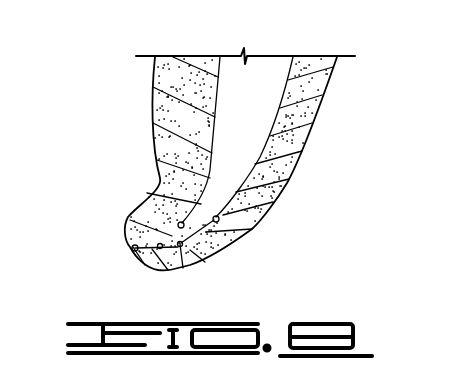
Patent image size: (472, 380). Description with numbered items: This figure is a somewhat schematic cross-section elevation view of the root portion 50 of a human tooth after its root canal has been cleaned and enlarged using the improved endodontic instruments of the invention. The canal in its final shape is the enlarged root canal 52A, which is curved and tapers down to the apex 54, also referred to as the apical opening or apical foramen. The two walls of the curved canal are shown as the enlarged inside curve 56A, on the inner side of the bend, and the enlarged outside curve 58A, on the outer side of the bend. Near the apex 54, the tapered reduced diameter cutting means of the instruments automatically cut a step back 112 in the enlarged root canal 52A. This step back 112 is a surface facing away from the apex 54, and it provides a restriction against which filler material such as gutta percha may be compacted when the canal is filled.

The root portion 50 is at (173, 115).
The enlarged root canal 52A is at (246, 237).
The enlarged inside curve of the root canal 56A is at (163, 208).
The apex 54 is at (132, 248).
The step back 112 is at (155, 268).
The enlarged outside curve of the root canal 58A is at (183, 268).